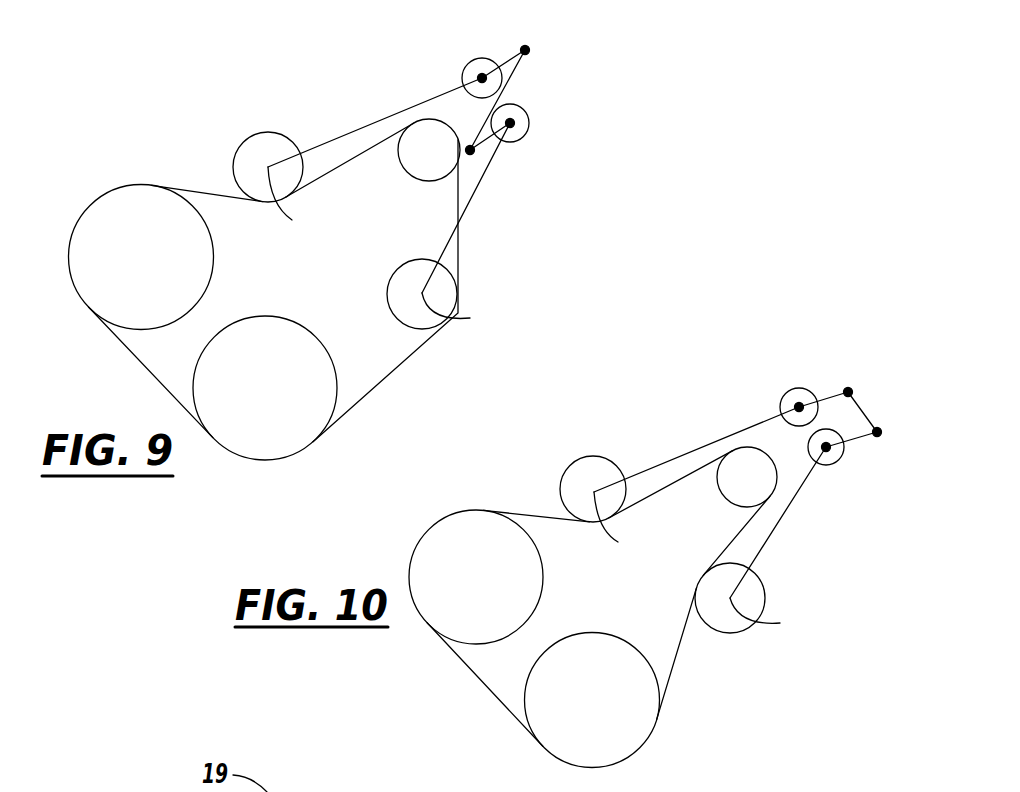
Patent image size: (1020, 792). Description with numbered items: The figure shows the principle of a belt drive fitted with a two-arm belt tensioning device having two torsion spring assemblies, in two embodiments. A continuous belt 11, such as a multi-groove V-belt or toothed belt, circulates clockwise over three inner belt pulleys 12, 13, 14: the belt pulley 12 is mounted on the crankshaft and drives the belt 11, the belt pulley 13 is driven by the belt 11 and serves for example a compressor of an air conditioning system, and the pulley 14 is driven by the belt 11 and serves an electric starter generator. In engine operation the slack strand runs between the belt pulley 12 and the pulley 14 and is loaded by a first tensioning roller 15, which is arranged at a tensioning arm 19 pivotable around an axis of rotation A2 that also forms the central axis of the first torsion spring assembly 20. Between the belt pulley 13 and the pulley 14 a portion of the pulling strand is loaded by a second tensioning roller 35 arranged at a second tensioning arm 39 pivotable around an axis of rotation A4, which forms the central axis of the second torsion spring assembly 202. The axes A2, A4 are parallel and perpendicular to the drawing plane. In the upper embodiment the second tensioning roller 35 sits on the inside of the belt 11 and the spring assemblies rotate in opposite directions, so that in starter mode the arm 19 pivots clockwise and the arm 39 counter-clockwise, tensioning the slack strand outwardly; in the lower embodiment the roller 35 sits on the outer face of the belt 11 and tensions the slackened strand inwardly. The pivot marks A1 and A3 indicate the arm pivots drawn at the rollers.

In FIG. 9, the continuous belt 11 is at (137, 358).
In FIG. 10, the continuous belt 11 is at (472, 673).
In FIG. 9, the belt pulley 12 is at (108, 195).
In FIG. 10, the belt pulley 12 is at (447, 515).
In FIG. 9, the belt pulley 13 is at (337, 395).
In FIG. 10, the belt pulley 13 is at (660, 715).
In FIG. 9, the pulley 14 is at (428, 181).
In FIG. 10, the pulley 14 is at (730, 501).
In FIG. 9, the first tensioning roller 15 is at (255, 132).
In FIG. 10, the first tensioning roller 15 is at (580, 460).
In FIG. 9, the tensioning arm 19 is at (360, 127).
In FIG. 10, the tensioning arm 19 is at (695, 448).
In FIG. 9, the torsion spring assembly 20 is at (463, 78).
In FIG. 10, the torsion spring assembly 20 is at (780, 403).
In FIG. 9, the second torsion spring assembly 202 is at (497, 137).
In FIG. 10, the second torsion spring assembly 202 is at (830, 466).
In FIG. 9, the second tensioning roller 35 is at (387, 294).
In FIG. 10, the second tensioning roller 35 is at (695, 585).
In FIG. 9, the second tensioning arm 39 is at (472, 200).
In FIG. 10, the second tensioning arm 39 is at (780, 520).
In FIG. 9, the first pivot axis A1 is at (296, 207).
In FIG. 10, the first pivot axis A1 is at (620, 528).
In FIG. 9, the axis of rotation A2 is at (482, 78).
In FIG. 10, the axis of rotation A2 is at (799, 407).
In FIG. 9, the third pivot axis A3 is at (466, 314).
In FIG. 10, the third pivot axis A3 is at (775, 620).
In FIG. 9, the axis of rotation A4 is at (512, 123).
In FIG. 10, the axis of rotation A4 is at (827, 448).